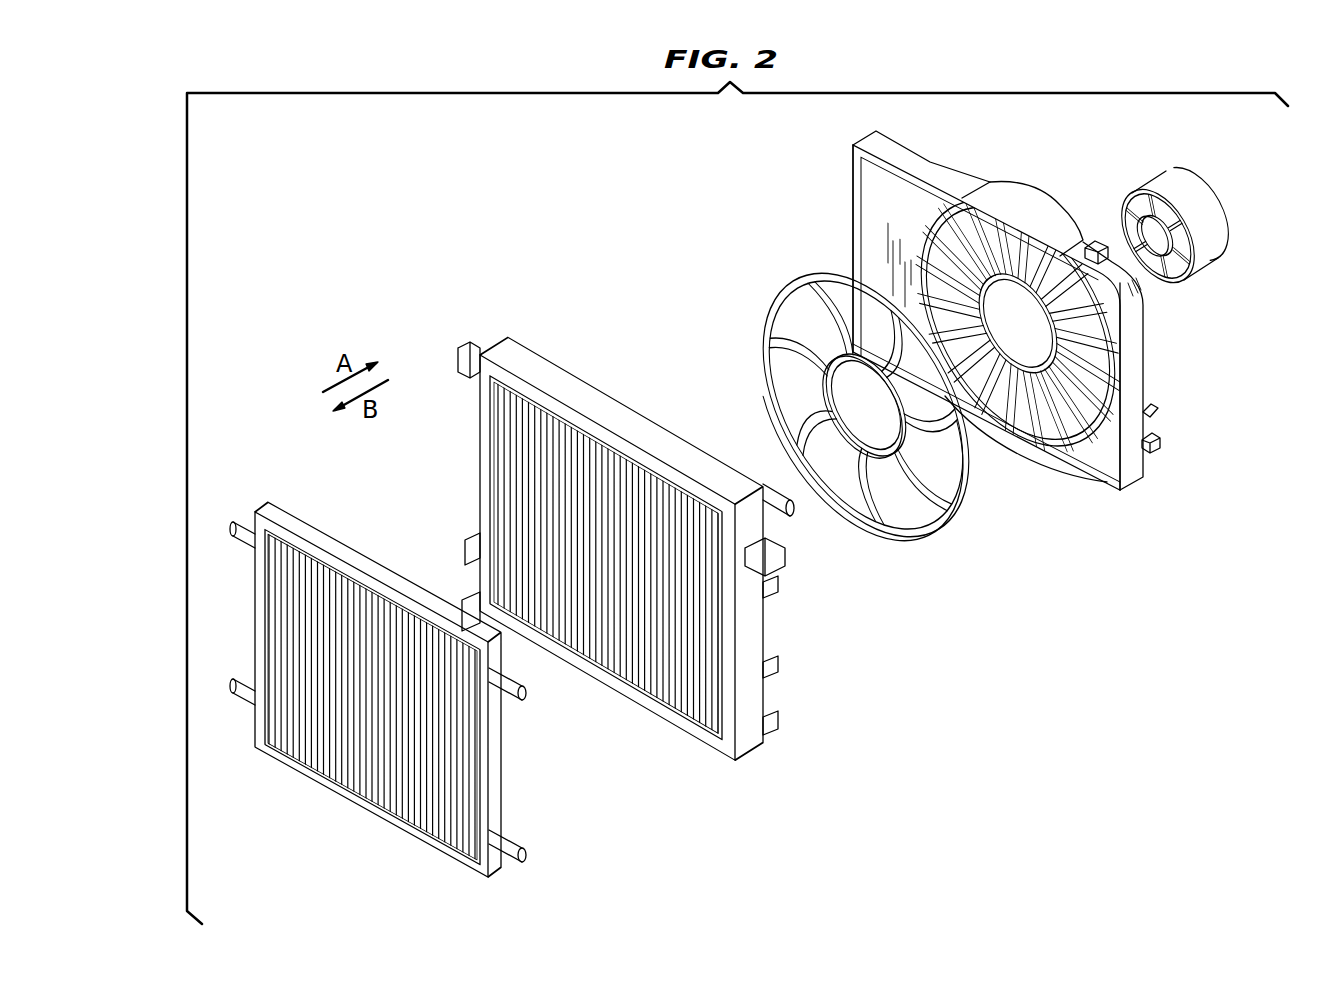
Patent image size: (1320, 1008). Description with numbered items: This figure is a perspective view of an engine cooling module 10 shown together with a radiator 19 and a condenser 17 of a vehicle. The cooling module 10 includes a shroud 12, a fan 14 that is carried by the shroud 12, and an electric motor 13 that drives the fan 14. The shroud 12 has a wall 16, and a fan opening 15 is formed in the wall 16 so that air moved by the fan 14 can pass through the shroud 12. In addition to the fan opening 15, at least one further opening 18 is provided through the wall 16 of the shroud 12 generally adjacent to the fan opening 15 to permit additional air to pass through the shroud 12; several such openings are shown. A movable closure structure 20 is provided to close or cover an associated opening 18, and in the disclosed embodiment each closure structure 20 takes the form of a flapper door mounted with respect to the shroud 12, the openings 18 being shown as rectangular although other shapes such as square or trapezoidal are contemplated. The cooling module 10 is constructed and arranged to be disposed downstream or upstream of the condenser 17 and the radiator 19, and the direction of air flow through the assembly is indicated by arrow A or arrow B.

The engine cooling module 10 is at (1062, 155).
The shroud 12 is at (1093, 245).
The electric motor 13 is at (1205, 200).
The fan 14 is at (952, 512).
The fan opening 15 is at (1022, 218).
The wall 16 is at (1018, 323).
The condenser 17 is at (330, 792).
The opening 18 is at (851, 198).
The radiator 19 is at (603, 688).
The movable closure structure 20 is at (1006, 319).